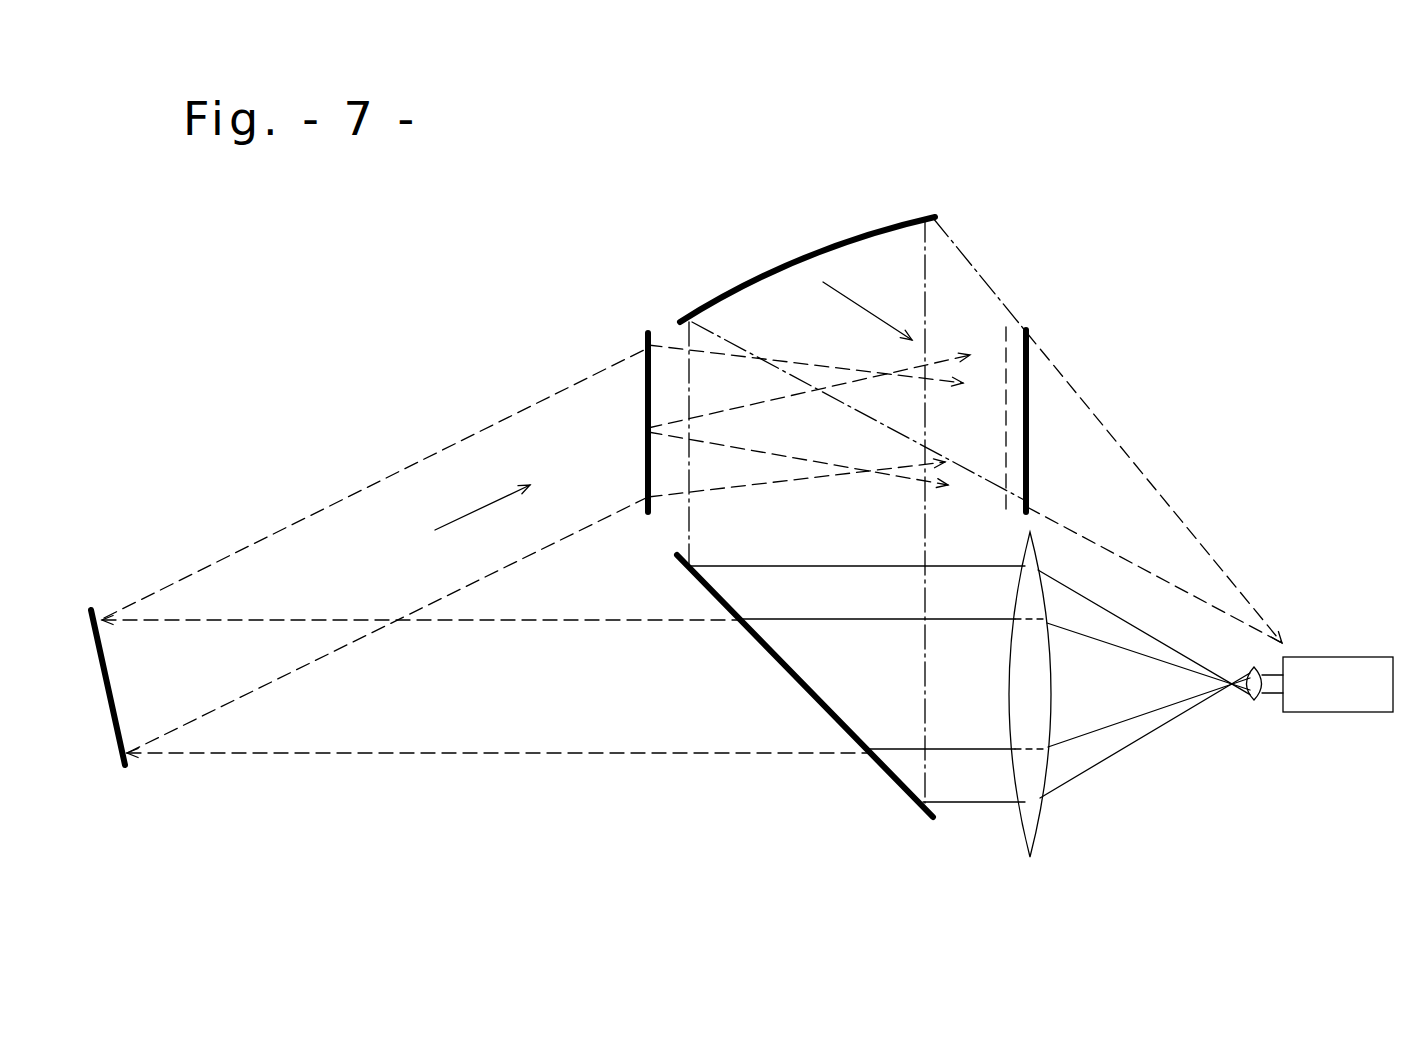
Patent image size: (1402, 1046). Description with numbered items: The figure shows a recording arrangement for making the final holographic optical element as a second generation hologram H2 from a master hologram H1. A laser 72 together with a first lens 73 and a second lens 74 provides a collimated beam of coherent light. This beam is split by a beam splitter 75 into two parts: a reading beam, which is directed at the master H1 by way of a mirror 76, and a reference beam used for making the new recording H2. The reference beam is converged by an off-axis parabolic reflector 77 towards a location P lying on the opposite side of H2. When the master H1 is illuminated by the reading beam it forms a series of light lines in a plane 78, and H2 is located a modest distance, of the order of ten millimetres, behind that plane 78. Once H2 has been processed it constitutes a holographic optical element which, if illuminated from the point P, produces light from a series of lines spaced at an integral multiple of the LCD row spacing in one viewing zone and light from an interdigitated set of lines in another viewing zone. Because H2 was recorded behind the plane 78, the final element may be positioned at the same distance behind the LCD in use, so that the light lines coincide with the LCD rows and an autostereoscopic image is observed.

The laser 72 is at (1330, 707).
The lens 73 is at (1250, 702).
The lens 74 is at (1032, 815).
The beam splitter 75 is at (882, 770).
The mirror 76 is at (117, 740).
The off-axis parabolic reflector 77 is at (807, 260).
The plane of the light lines 78 is at (1007, 327).
The master hologram H1 is at (645, 382).
The second generation hologram H2 is at (1028, 418).
The location P is at (1285, 640).